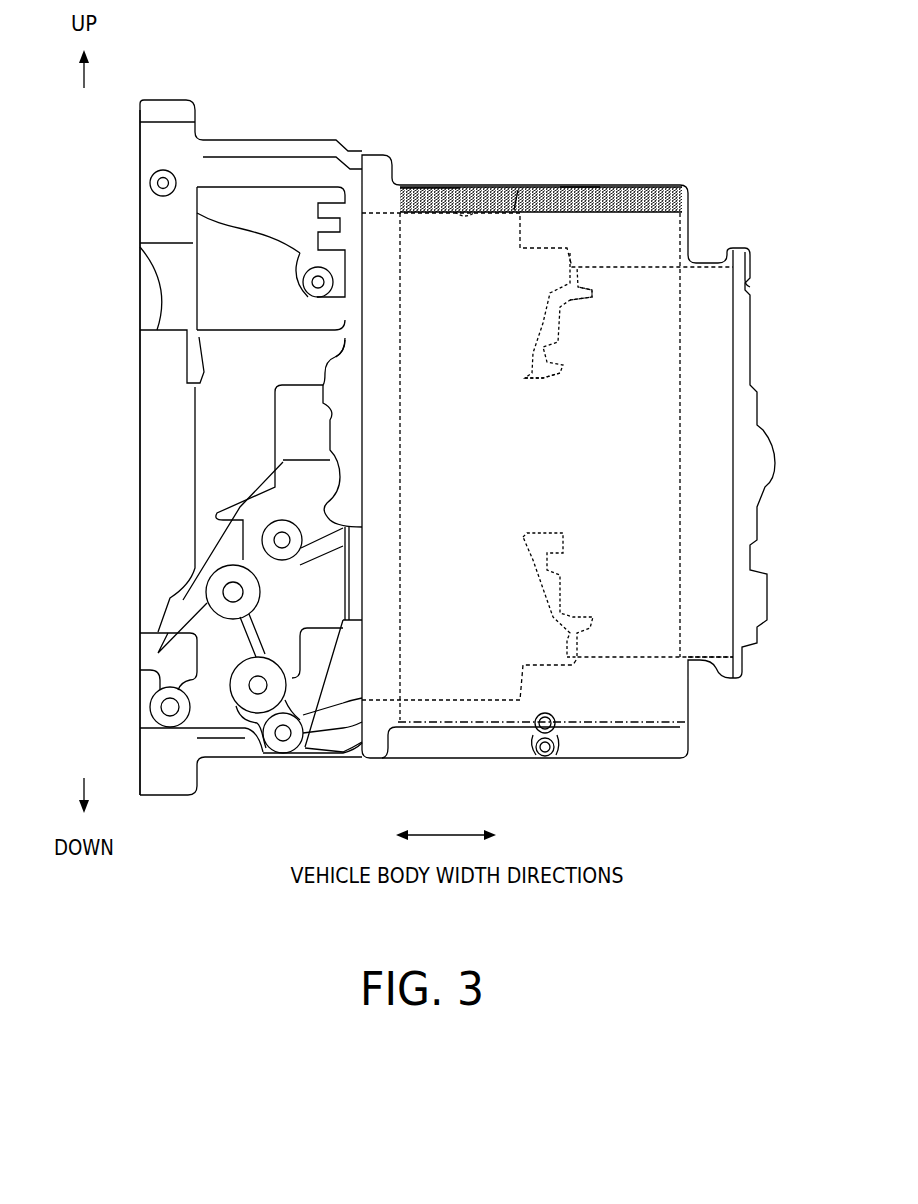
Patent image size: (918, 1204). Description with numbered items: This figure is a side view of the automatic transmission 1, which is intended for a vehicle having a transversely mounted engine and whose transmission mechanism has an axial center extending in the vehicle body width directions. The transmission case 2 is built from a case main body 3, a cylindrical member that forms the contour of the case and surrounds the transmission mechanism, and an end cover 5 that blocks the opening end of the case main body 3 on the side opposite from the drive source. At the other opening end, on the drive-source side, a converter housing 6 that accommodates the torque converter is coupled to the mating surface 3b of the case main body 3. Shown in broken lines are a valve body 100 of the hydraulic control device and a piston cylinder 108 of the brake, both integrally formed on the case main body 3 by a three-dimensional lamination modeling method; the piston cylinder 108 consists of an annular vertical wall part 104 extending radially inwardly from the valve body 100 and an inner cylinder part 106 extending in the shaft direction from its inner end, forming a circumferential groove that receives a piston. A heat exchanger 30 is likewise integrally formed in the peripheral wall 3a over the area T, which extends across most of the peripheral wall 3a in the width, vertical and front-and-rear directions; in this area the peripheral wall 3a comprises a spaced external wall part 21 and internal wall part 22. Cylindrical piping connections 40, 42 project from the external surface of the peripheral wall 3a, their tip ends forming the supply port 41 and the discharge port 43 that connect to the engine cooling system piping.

The automatic transmission 1 is at (738, 80).
The transmission case 2 is at (704, 187).
The case main body 3 is at (627, 176).
The peripheral wall 3a is at (570, 185).
The mating surface 3b is at (343, 343).
The end cover 5 is at (749, 321).
The converter housing 6 is at (265, 152).
The external wall part 21 is at (430, 187).
The internal wall part 22 is at (481, 212).
The heat exchanger 30 is at (518, 188).
The piping connection 40 is at (558, 729).
The supply port 41 is at (530, 735).
The piping connection 42 is at (557, 753).
The discharge port 43 is at (536, 755).
The valve body 100 is at (652, 282).
The vertical wall part 104 is at (539, 326).
The inner cylinder part 106 is at (557, 386).
The piston cylinder 108 is at (563, 327).
The area T is at (695, 668).